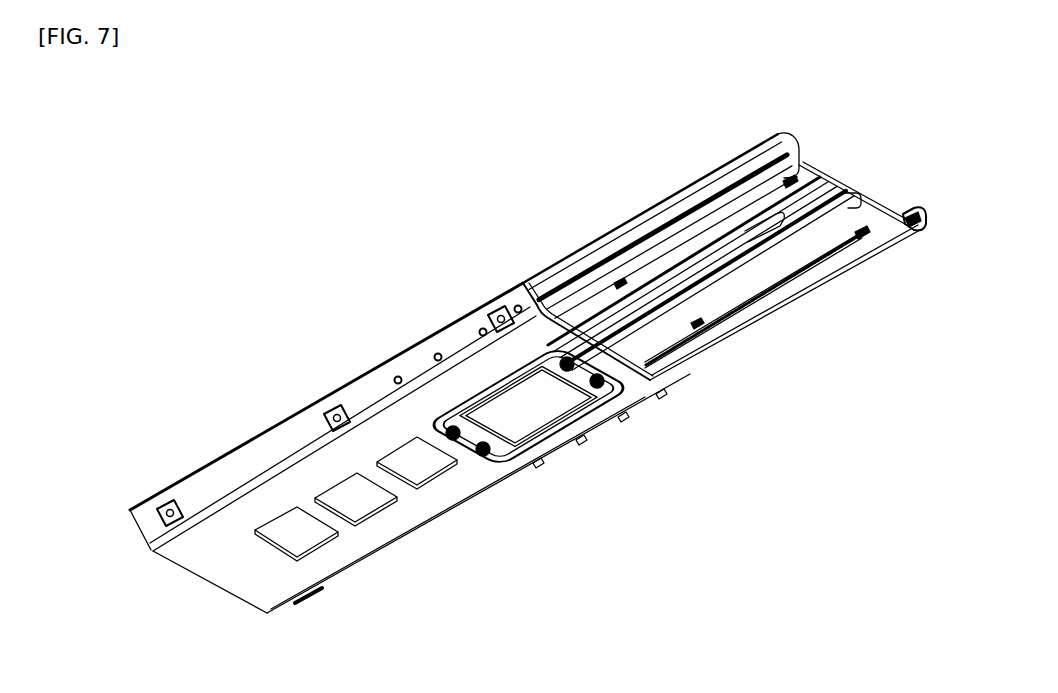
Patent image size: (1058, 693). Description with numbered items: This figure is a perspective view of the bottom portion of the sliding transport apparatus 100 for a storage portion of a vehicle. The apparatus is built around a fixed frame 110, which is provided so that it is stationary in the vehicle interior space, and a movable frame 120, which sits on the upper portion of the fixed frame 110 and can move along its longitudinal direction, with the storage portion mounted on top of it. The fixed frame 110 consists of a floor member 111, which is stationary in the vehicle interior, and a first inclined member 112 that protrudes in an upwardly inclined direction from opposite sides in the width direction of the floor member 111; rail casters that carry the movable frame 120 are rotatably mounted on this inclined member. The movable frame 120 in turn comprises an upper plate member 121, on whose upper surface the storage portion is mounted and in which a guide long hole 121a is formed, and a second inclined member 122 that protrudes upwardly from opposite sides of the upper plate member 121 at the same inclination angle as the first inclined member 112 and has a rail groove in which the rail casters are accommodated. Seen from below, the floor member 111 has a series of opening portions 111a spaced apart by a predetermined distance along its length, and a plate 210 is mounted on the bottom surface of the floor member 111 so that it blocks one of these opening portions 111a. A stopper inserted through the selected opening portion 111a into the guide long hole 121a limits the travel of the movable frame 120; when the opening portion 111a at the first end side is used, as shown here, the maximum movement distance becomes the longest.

The sliding transport apparatus 100 is at (405, 146).
The fixed frame 110 is at (341, 333).
The floor member 111 is at (453, 388).
The opening portions 111a is at (418, 460).
The first inclined member 112 is at (467, 340).
The movable frame 120 is at (961, 345).
The upper plate member 121 is at (862, 218).
The guide long hole 121a is at (750, 238).
The second inclined member 122 is at (793, 190).
The plate 210 is at (538, 415).